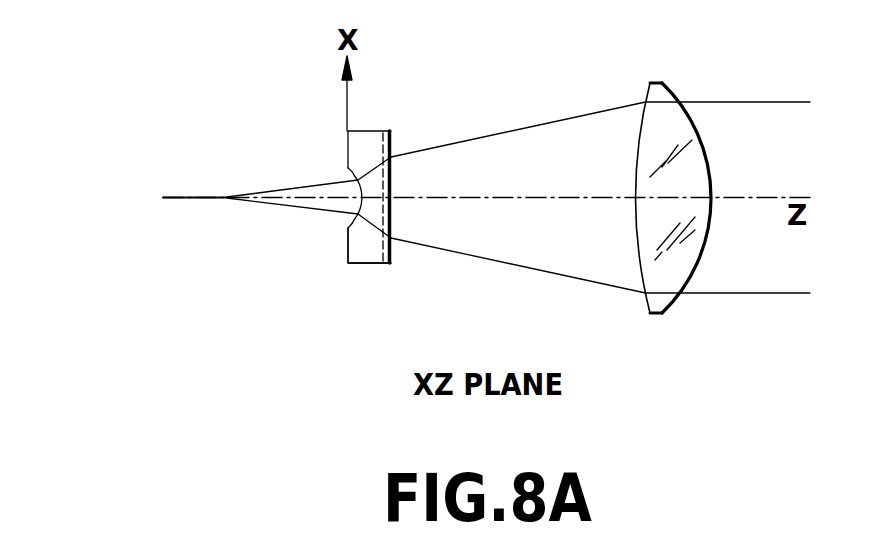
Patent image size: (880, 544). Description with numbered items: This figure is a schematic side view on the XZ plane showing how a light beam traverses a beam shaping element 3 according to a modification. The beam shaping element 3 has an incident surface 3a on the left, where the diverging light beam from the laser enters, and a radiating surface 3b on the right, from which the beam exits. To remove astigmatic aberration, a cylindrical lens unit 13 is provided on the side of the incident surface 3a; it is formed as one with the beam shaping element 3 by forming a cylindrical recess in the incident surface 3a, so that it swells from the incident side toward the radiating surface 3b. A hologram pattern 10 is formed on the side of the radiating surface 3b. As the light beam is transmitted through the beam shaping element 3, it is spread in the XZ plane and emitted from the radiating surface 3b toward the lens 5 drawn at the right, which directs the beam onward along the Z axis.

The beam shaping element 3 is at (374, 183).
The incident surface 3a is at (347, 252).
The radiating surface 3b is at (392, 255).
The collimator lens 5 is at (659, 92).
The hologram pattern 10 is at (395, 139).
The cylindrical lens unit 13 is at (346, 172).